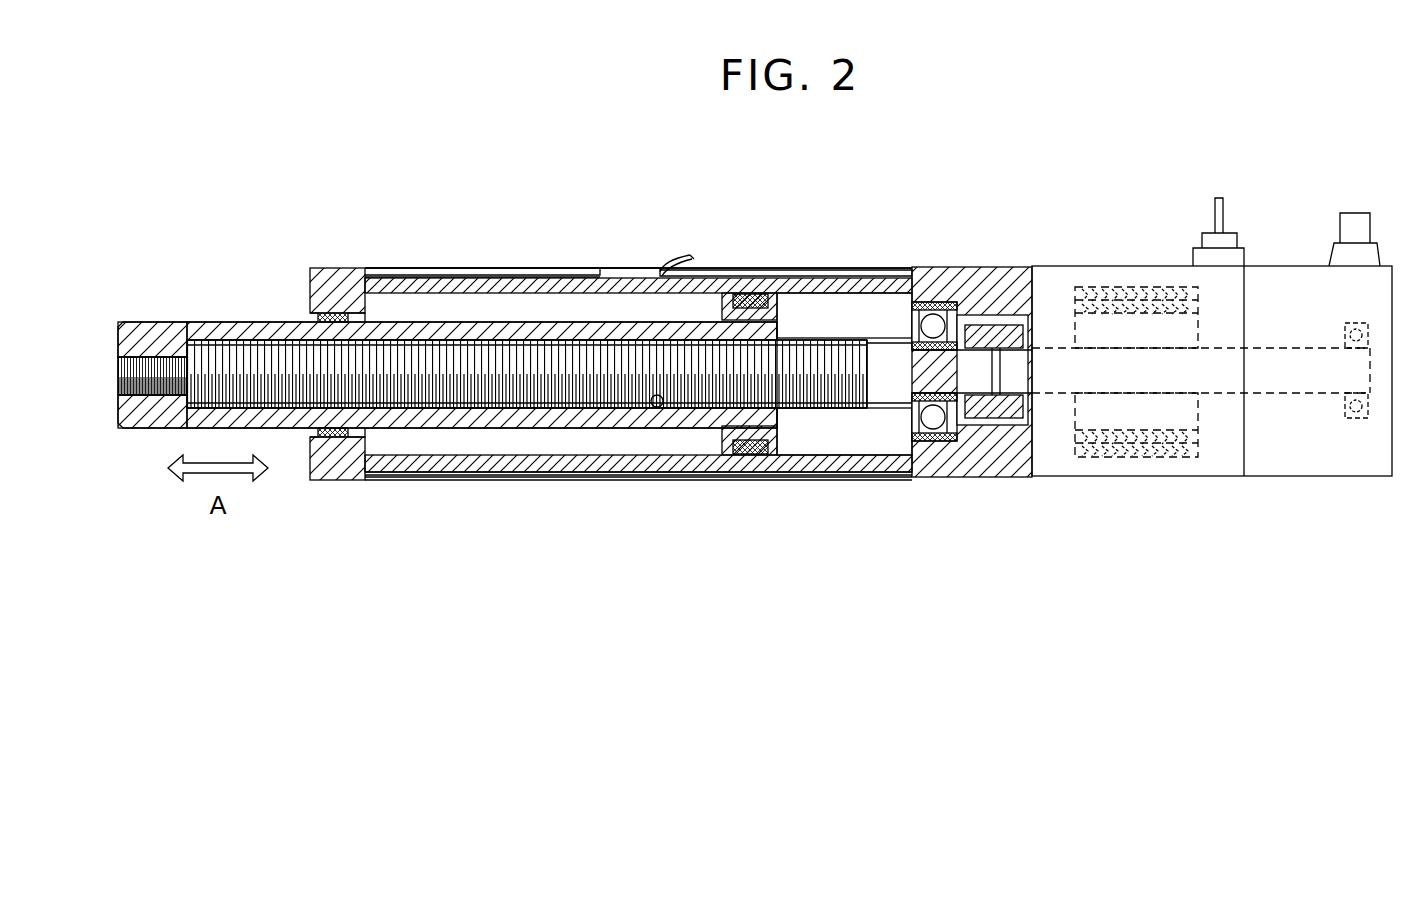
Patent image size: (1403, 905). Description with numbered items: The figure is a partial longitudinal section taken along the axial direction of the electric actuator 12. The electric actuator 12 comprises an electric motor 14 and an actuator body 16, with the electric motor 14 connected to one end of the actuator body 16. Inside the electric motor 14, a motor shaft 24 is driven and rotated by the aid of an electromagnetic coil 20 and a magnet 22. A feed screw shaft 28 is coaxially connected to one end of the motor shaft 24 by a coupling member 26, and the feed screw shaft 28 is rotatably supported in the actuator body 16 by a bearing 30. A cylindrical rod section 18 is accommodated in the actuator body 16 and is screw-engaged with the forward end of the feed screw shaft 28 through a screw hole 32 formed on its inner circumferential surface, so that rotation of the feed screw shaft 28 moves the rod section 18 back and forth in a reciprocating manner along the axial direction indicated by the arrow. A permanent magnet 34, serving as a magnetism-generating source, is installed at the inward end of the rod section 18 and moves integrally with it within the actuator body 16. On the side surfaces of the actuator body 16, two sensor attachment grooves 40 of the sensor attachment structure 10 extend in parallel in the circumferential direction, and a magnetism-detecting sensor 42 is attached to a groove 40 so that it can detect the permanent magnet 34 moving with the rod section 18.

The sensor attachment structure 10 is at (831, 266).
The electric actuator 12 is at (966, 141).
The electric motor 14 is at (1257, 230).
The actuator body 16 is at (460, 250).
The rod section 18 is at (222, 335).
The electromagnetic coil 20 is at (1140, 318).
The magnet 22 is at (1110, 320).
The motor shaft 24 is at (1217, 385).
The coupling member 26 is at (985, 332).
The feed screw shaft 28 is at (512, 355).
The bearing 30 is at (933, 324).
The screw hole 32 is at (655, 406).
The permanent magnet 34 is at (750, 300).
The sensor attachment groove 40 is at (718, 266).
The magnetism-detecting sensor 42 is at (633, 268).